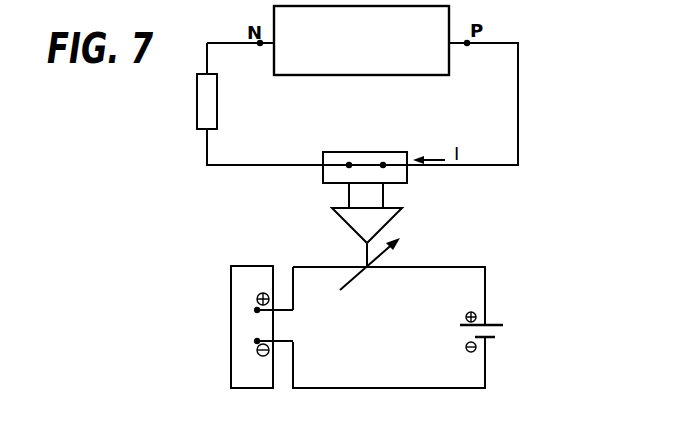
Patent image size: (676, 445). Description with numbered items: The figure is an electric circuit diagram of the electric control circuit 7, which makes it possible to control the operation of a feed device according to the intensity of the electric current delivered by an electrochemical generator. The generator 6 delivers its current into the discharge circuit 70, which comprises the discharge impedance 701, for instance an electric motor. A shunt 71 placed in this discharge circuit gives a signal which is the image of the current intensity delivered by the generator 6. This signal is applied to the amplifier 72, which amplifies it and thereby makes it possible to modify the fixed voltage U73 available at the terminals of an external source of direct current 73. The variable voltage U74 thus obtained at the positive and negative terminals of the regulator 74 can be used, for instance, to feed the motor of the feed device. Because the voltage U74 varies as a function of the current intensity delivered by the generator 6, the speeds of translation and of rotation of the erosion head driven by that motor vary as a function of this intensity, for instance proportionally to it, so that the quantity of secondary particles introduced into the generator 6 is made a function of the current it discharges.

The generator 6 is at (370, 54).
The electric control circuit 7 is at (501, 249).
The discharge circuit 70 is at (518, 92).
The discharge impedance 701 is at (217, 118).
The shunt 71 is at (345, 150).
The amplifier 72 is at (385, 224).
The external source of direct current 73 is at (488, 323).
The regulator 74 is at (231, 343).
The fixed voltage U73 is at (497, 332).
The variable voltage U74 is at (259, 328).